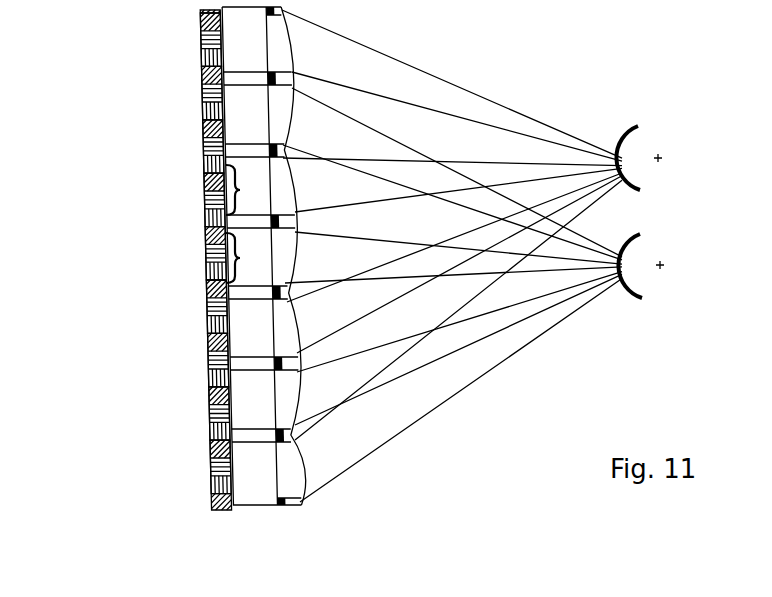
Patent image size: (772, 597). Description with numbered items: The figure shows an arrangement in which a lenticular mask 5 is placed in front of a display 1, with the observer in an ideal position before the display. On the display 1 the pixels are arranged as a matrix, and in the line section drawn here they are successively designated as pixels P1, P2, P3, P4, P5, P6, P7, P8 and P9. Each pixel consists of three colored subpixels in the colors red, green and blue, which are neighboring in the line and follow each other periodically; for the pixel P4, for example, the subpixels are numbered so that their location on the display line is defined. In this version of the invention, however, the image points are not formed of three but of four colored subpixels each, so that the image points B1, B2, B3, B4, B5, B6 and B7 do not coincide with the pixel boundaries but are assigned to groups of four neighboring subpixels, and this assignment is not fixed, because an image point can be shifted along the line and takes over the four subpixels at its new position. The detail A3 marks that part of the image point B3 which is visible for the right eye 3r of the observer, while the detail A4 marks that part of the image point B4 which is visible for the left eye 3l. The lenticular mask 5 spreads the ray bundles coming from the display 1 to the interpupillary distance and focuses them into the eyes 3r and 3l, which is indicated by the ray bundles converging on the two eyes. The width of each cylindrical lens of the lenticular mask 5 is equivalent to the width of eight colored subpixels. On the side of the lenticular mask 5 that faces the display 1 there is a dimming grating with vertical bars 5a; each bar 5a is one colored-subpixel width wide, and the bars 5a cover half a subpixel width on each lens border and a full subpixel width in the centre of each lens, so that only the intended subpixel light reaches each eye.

The display 1 is at (222, 512).
The lenticular mask 5 is at (264, 287).
The vertical bars 5a is at (279, 440).
The right eye 3r is at (657, 158).
The left eye 3l is at (657, 266).
The detail A3 is at (245, 190).
The detail A4 is at (245, 258).
The pixel P1 is at (40, 13).
The pixel P2 is at (202, 117).
The pixel P3 is at (204, 172).
The pixel P4 is at (45, 227).
The pixel P5 is at (206, 278).
The pixel P6 is at (207, 334).
The pixel P7 is at (208, 387).
The pixel P8 is at (48, 438).
The pixel P9 is at (211, 494).
The image point B1 is at (110, 85).
The image point B2 is at (115, 155).
The image point B3 is at (110, 227).
The image point B4 is at (118, 298).
The image point B5 is at (120, 370).
The image point B6 is at (120, 438).
The image point B7 is at (125, 512).